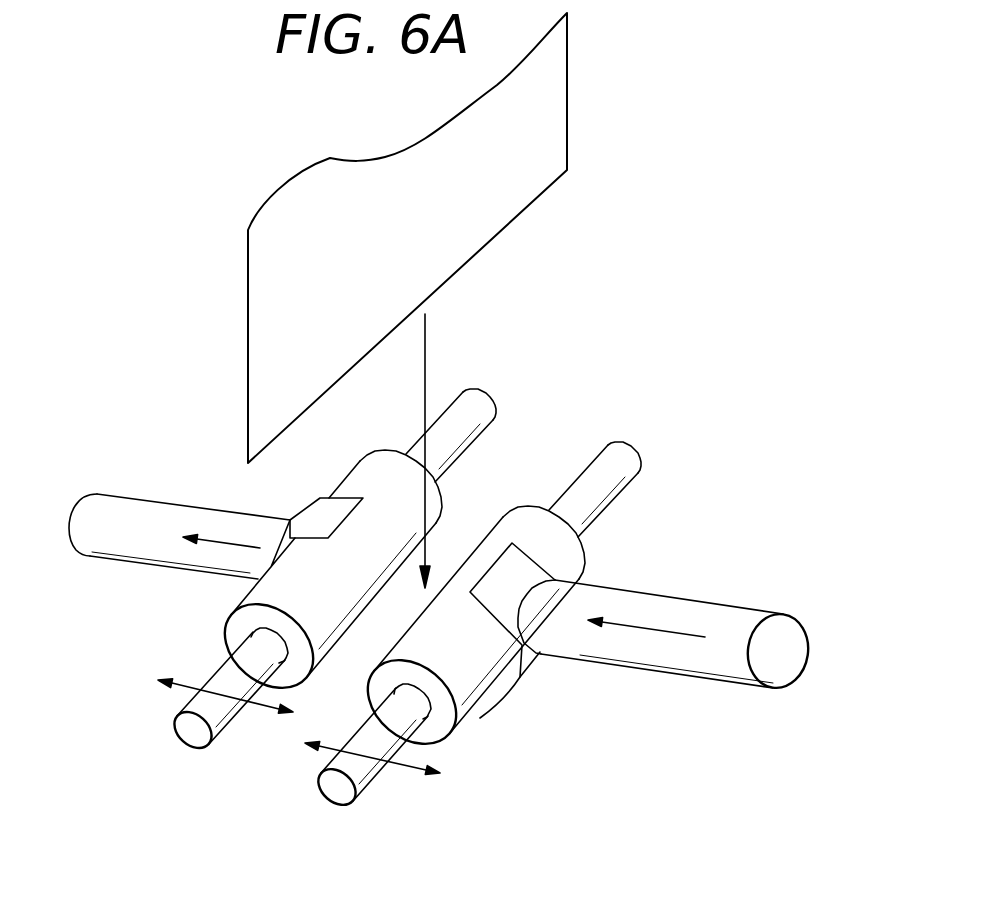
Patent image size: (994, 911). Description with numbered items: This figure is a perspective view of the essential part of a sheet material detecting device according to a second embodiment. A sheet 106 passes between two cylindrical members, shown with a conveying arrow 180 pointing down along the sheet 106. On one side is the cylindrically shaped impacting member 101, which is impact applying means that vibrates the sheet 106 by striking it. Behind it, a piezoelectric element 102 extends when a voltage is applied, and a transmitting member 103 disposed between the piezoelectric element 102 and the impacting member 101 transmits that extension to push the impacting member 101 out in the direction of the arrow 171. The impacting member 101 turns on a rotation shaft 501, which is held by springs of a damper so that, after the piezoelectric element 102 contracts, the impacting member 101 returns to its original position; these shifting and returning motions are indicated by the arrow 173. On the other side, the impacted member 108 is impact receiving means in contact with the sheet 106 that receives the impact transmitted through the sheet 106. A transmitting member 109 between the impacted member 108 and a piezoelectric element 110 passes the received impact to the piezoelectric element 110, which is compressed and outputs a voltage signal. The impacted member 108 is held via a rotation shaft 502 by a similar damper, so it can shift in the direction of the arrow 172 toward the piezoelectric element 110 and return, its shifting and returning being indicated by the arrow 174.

The sheet 106 is at (558, 97).
The sheet conveying direction arrow 180 is at (427, 338).
The impacted member 108 is at (225, 632).
The rotation shaft 502 is at (185, 737).
The transmitting member 109 is at (340, 512).
The piezoelectric element 110 is at (105, 494).
The arrow 172 is at (225, 547).
The arrow 174 is at (177, 690).
The impacting member 101 is at (528, 508).
The rotation shaft 501 is at (618, 441).
The transmitting member 103 is at (527, 568).
The piezoelectric element 102 is at (745, 607).
The arrow 171 is at (650, 630).
The arrow 173 is at (400, 767).